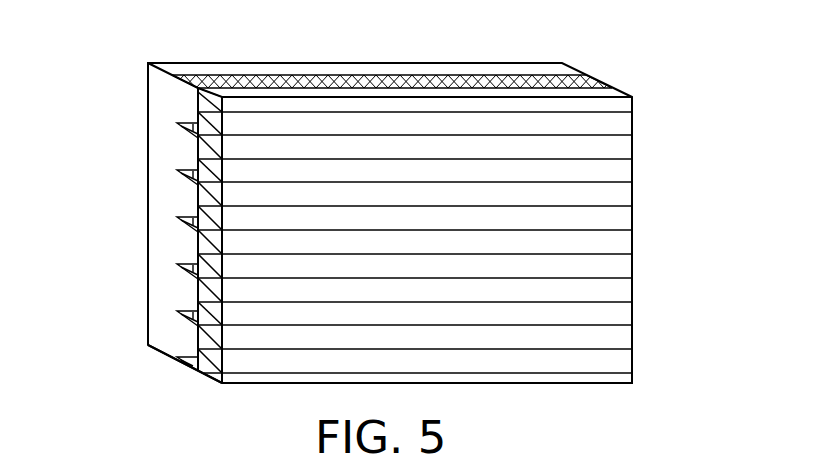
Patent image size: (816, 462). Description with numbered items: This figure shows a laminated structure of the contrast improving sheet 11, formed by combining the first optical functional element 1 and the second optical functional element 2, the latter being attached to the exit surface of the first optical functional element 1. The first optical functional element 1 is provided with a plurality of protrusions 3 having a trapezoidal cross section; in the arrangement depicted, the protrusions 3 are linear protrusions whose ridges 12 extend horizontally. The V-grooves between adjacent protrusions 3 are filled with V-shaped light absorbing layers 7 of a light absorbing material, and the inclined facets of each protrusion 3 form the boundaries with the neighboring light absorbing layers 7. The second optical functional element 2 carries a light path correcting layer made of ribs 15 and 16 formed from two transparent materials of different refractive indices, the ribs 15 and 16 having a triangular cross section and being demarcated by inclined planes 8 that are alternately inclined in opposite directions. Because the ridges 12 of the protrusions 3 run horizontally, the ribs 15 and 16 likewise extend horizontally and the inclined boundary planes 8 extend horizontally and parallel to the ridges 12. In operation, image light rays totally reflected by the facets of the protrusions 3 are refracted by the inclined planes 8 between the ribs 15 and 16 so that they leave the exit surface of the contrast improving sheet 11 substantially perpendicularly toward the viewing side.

The first optical functional element 1 is at (576, 61).
The second optical functional element 2 is at (628, 88).
The protrusions 3 is at (180, 200).
The light absorbing layers 7 is at (413, 76).
The inclined planes 8 is at (215, 99).
The contrast improving sheet 11 is at (650, 147).
The ridges 12 is at (197, 152).
The ribs 15 is at (222, 102).
The ribs 16 is at (198, 108).